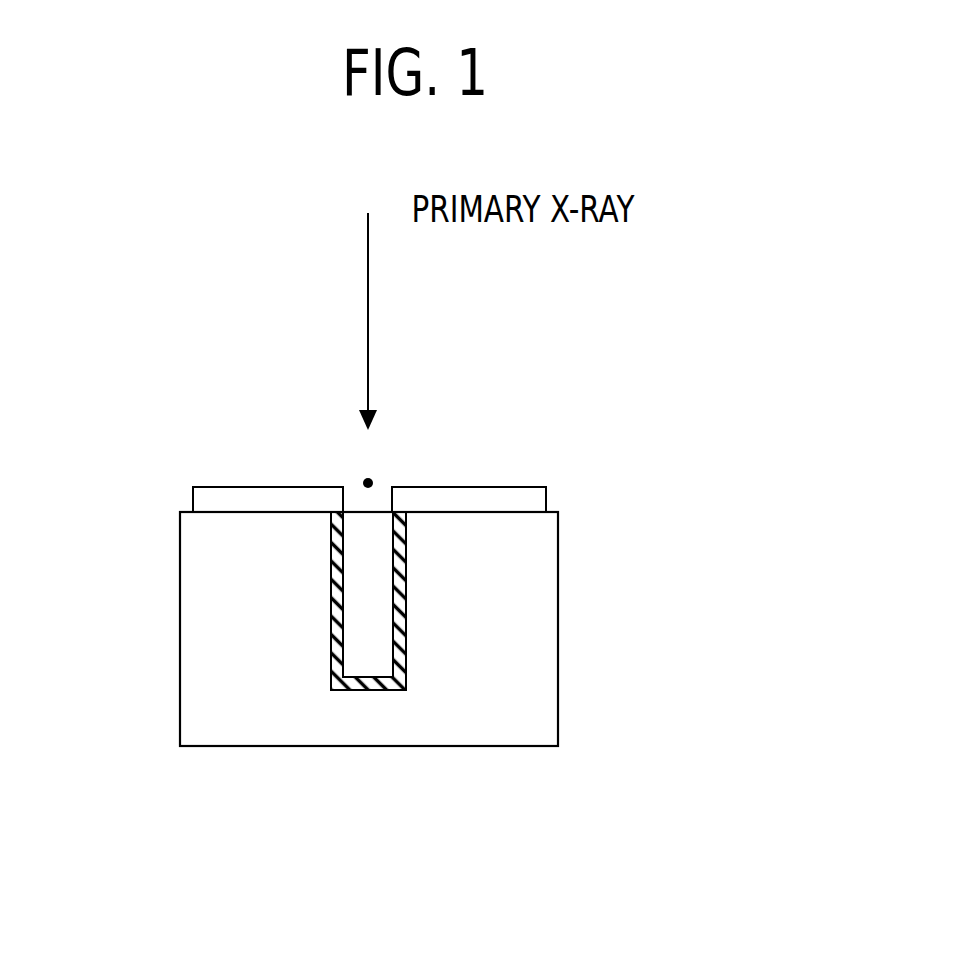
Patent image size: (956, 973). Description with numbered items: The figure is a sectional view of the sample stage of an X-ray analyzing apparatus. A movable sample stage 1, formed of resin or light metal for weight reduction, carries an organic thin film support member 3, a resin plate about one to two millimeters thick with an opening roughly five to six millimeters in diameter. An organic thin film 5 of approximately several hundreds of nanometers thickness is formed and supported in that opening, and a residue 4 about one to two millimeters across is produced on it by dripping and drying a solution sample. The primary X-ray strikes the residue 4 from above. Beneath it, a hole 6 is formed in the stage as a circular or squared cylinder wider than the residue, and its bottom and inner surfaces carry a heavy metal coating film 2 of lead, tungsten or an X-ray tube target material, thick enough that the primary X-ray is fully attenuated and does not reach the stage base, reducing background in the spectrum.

The movable sample stage 1 is at (541, 637).
The heavy metal coating film 2 is at (357, 688).
The organic thin film support member 3 is at (533, 505).
The residue 4 is at (368, 483).
The organic thin film 5 is at (350, 488).
The hole 6 is at (367, 615).